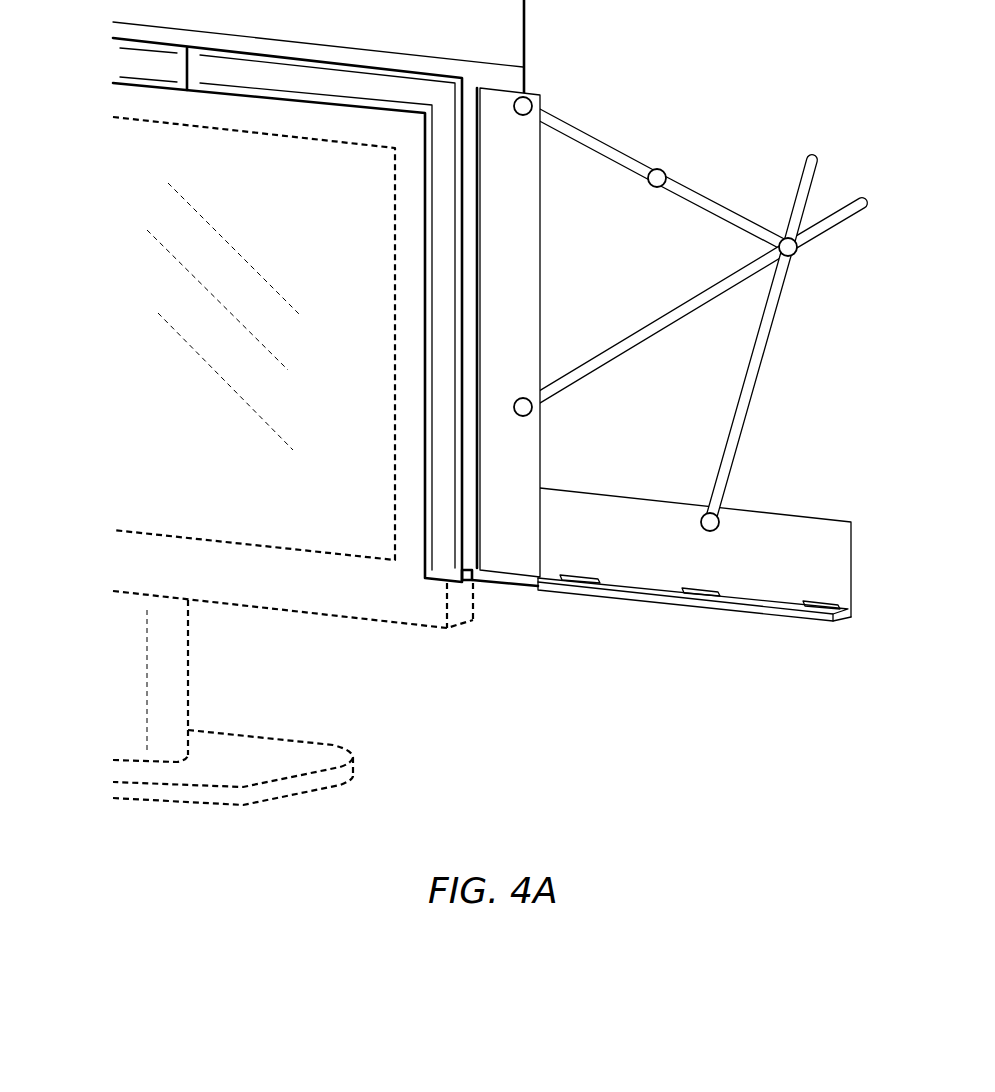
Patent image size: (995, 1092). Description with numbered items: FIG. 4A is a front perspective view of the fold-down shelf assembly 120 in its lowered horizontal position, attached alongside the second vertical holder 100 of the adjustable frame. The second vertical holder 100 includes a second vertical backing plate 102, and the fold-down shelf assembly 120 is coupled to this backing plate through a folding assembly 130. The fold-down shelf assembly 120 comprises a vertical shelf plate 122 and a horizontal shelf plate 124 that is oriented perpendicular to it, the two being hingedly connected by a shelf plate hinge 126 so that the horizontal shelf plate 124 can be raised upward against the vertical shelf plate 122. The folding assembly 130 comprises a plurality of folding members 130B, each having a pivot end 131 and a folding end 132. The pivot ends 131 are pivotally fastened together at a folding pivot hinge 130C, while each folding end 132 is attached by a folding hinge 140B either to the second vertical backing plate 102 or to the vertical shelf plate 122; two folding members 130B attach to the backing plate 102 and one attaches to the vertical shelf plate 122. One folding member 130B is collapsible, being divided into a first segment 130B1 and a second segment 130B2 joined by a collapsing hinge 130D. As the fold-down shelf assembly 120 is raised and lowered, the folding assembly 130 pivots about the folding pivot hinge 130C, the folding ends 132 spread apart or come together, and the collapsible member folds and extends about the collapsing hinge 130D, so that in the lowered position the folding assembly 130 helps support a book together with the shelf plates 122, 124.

The second vertical holder 100 is at (530, 95).
The second vertical backing plate 102 is at (523, 253).
The fold-down shelf assembly 120 is at (730, 614).
The vertical shelf plate 122 is at (853, 556).
The horizontal shelf plate 124 is at (832, 623).
The shelf plate hinge 126 is at (826, 602).
The folding assembly 130 is at (688, 303).
The folding members 130B is at (710, 294).
The first segment 130B1 is at (609, 144).
The second segment 130B2 is at (712, 218).
The folding pivot hinge 130C is at (794, 257).
The collapsing hinge 130D is at (661, 168).
The pivot end 131 is at (796, 194).
The folding end 132 is at (574, 122).
The folding hinge 140B is at (526, 97).